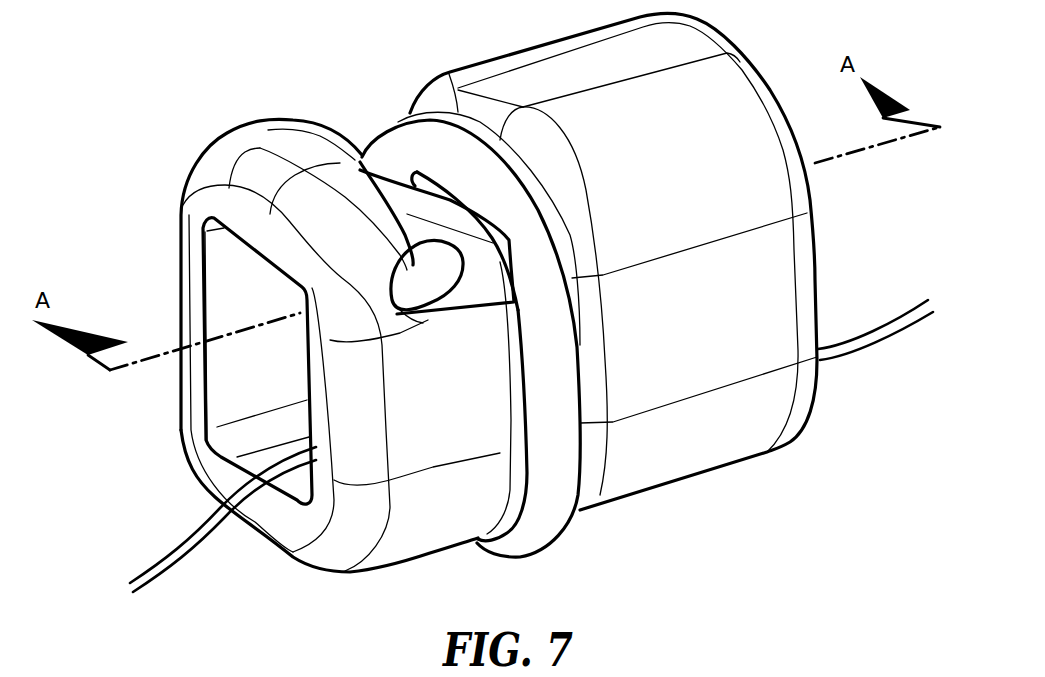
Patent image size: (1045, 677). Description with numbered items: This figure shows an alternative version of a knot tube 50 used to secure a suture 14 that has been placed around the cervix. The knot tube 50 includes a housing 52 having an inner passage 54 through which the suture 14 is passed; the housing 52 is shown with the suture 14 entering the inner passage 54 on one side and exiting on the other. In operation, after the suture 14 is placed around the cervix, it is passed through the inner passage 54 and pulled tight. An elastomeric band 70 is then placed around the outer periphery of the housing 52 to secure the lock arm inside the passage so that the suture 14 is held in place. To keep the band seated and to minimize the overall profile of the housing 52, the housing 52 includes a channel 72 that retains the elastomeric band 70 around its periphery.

The suture 14 is at (192, 547).
The knot tube 50 is at (181, 111).
The housing 52 is at (706, 450).
The inner passage 54 is at (247, 375).
The elastomeric band 70 is at (560, 352).
The channel 72 is at (350, 122).